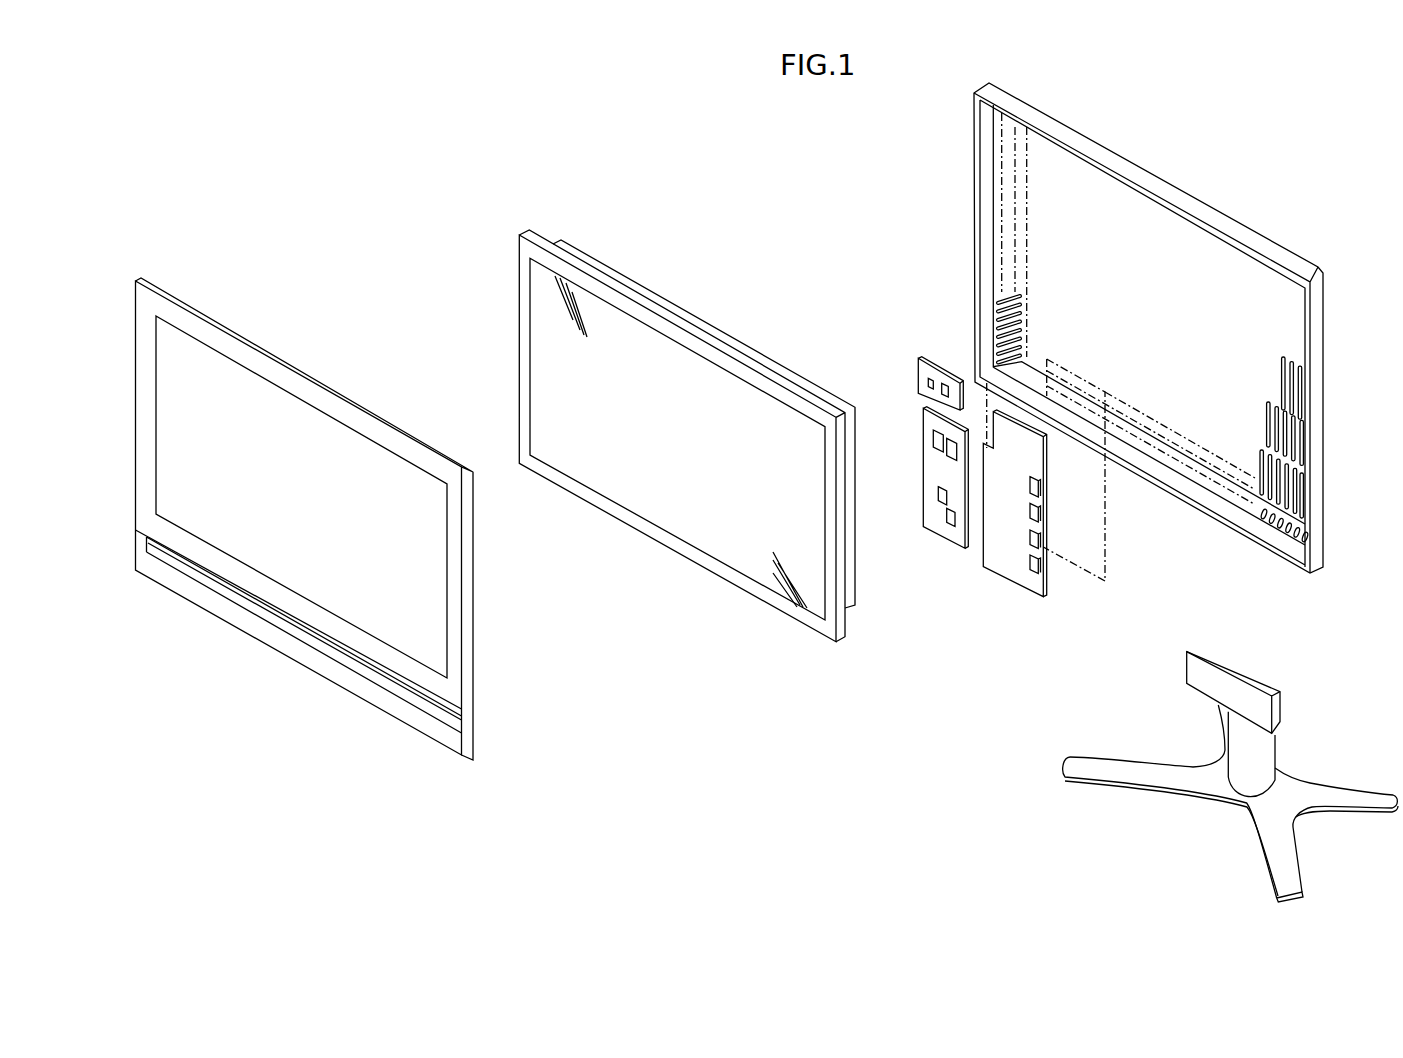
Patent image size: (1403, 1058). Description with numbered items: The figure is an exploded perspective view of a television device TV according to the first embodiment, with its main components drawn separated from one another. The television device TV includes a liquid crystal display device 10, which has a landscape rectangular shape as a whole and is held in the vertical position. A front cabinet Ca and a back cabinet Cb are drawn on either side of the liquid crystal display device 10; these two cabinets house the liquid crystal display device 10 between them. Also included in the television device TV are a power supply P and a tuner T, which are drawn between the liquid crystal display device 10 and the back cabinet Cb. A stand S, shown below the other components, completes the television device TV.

The television device TV is at (709, 170).
The front cabinet Ca is at (285, 362).
The liquid crystal display device 10 is at (630, 279).
The back cabinet Cb is at (1142, 168).
The tuner T is at (940, 537).
The power supply P is at (1008, 576).
The stand S is at (1138, 787).